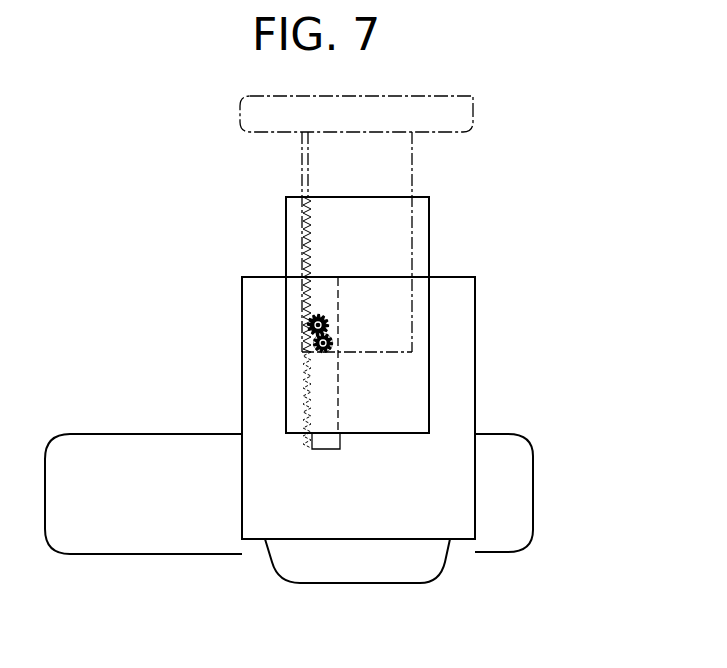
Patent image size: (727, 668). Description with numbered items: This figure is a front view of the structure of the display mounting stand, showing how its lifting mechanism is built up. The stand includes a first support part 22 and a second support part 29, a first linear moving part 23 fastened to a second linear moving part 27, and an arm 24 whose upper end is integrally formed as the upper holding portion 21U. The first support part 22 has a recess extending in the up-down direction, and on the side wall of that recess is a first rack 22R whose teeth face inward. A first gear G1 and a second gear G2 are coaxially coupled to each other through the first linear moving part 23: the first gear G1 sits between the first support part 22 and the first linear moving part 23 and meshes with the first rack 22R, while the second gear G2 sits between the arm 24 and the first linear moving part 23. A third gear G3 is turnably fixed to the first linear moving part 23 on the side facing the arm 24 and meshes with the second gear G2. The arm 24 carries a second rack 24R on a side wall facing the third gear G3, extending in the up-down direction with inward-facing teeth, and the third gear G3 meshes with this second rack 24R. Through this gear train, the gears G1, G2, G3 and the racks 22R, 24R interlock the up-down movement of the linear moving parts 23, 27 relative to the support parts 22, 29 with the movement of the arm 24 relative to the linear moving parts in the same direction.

The upper holding portion 21U is at (473, 109).
The arm 24 is at (412, 160).
The first linear moving part 23 is at (429, 214).
The second linear moving part 27 is at (429, 245).
The first support part 22 is at (475, 293).
The second support part 29 is at (475, 326).
The second rack 24R is at (302, 262).
The first rack 22R is at (313, 385).
The third gear G3 is at (328, 320).
The first gear G1 is at (334, 340).
The second gear G2 is at (334, 340).